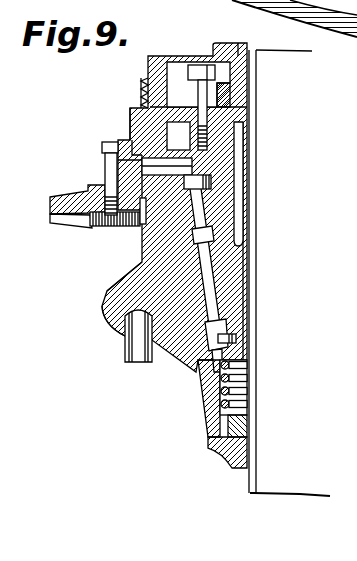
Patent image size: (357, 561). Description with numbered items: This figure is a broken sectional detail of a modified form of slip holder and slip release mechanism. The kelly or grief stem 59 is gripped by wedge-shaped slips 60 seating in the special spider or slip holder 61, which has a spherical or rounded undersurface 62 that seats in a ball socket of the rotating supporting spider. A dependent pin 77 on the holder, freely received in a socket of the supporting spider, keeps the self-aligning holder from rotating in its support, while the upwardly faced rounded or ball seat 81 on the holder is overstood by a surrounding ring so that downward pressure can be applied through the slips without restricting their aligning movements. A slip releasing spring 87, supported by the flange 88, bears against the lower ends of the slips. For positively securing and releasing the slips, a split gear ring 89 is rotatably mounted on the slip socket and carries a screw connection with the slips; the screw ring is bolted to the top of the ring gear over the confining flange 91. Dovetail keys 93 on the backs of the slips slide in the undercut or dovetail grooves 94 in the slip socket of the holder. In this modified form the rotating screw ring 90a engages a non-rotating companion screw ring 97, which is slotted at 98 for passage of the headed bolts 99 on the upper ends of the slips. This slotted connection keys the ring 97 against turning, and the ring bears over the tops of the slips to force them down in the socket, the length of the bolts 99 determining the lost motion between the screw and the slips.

The kelly or grief stem 59 is at (255, 478).
The wedge-shaped slips 60 is at (230, 225).
The slip holder 61 is at (145, 252).
The spherical or rounded undersurface 62 is at (118, 328).
The dependent pin 77 is at (147, 360).
The upwardly faced rounded or ball seat 81 is at (112, 290).
The slip releasing spring 87 is at (212, 398).
The flange 88 is at (232, 428).
The split gear ring 89 is at (52, 196).
The rotating screw ring 90a is at (130, 128).
The confining flange 91 is at (130, 177).
The dovetail keys 93 is at (213, 292).
The undercut or dovetail grooves 94 is at (230, 378).
The non-rotating companion screw ring 97 is at (142, 88).
The slot 98 is at (183, 105).
The headed bolts 99 is at (230, 101).